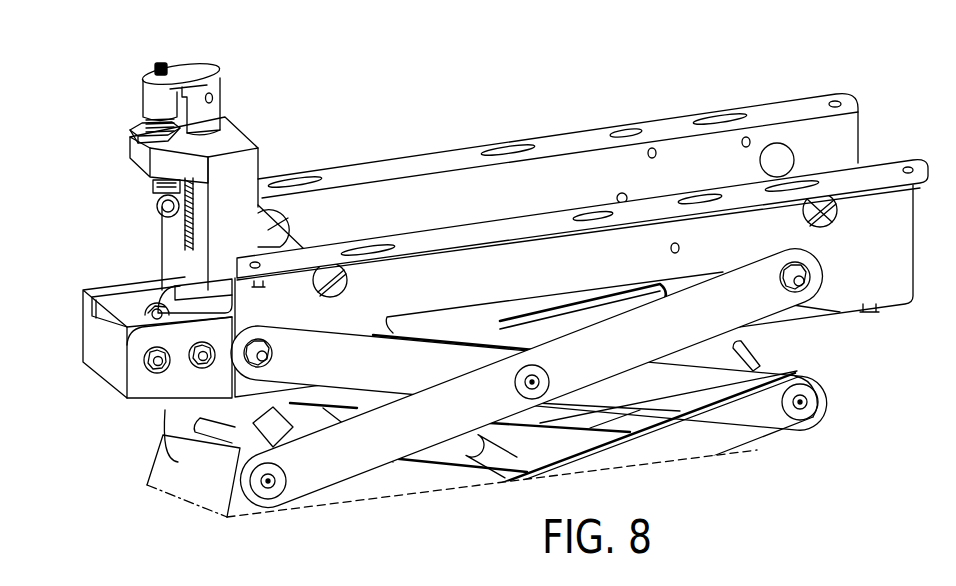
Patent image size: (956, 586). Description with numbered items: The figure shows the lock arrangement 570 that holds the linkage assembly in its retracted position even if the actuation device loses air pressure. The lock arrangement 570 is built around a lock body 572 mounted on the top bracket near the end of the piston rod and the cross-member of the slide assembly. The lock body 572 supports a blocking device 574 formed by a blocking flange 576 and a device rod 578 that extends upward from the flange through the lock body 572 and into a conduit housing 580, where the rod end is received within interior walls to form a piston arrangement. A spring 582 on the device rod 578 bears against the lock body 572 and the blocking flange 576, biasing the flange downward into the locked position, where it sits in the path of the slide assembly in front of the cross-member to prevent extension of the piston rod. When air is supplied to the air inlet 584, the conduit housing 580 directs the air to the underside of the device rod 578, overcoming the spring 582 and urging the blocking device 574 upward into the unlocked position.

The lock arrangement 570 is at (243, 117).
The lock body 572 is at (246, 145).
The blocking device 574 is at (153, 270).
The blocking flange 576 is at (135, 300).
The device rod 578 is at (183, 238).
The conduit housing 580 is at (152, 102).
The spring 582 is at (153, 184).
The air inlet 584 is at (158, 197).